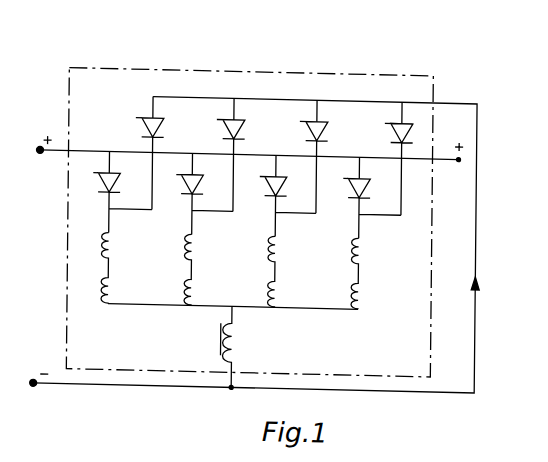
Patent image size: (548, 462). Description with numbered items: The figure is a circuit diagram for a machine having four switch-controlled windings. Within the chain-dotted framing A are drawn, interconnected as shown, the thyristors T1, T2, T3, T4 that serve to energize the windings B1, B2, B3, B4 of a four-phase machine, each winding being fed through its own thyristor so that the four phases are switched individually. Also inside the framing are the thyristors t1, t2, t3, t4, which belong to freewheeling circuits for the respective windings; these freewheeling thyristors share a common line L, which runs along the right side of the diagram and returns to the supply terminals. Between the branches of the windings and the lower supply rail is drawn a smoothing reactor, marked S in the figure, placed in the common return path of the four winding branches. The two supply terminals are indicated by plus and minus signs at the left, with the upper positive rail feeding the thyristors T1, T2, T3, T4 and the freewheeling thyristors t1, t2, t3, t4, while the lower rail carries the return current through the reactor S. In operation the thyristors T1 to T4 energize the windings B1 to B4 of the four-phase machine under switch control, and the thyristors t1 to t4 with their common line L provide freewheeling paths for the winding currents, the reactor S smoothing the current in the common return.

The chain-dotted framing A is at (131, 67).
The common line L is at (479, 300).
The smoothing inductor S is at (236, 348).
The thyristor t1 is at (159, 153).
The thyristor t2 is at (240, 155).
The thyristor t3 is at (323, 157).
The thyristor t4 is at (408, 159).
The thyristor T1 is at (123, 192).
The thyristor T2 is at (205, 194).
The thyristor T3 is at (287, 196).
The thyristor T4 is at (372, 198).
The winding B1 is at (116, 238).
The winding B2 is at (199, 238).
The winding B3 is at (282, 238).
The winding B4 is at (366, 238).